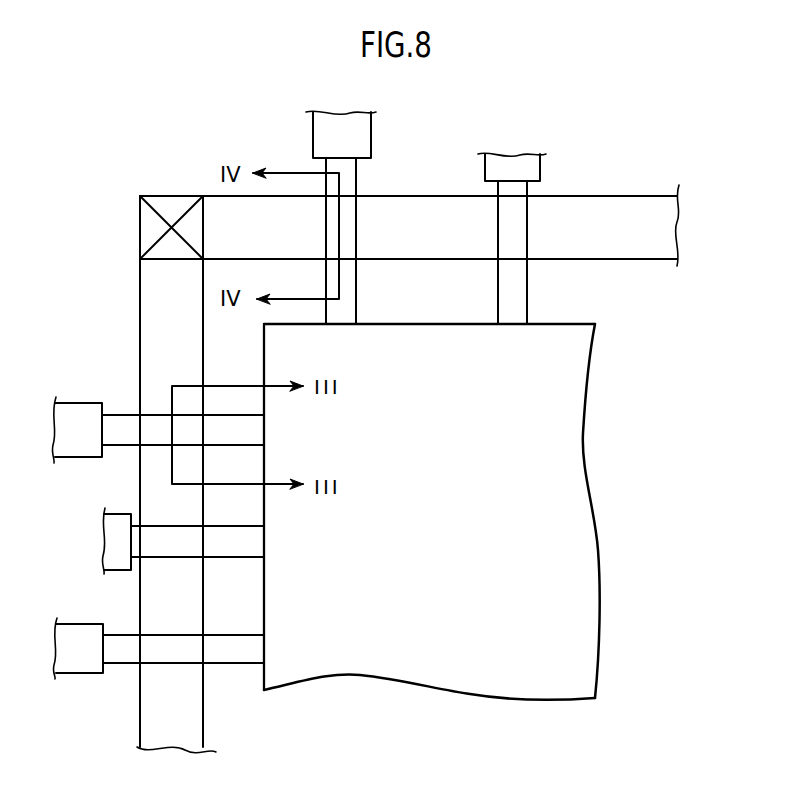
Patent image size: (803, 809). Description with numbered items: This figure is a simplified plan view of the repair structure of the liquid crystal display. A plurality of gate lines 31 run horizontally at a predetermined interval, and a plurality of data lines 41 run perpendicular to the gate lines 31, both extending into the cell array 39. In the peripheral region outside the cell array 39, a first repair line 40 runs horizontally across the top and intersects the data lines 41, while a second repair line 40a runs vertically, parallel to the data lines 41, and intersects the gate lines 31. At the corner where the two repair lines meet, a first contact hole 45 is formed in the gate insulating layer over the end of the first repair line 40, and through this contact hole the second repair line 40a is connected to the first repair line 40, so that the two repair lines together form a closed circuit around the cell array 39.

The gate line 31 is at (121, 430).
The cell array 39 is at (567, 461).
The first repair line 40 is at (661, 226).
The second repair line 40a is at (152, 315).
The data line 41 is at (515, 288).
The first contact hole 45 is at (170, 200).